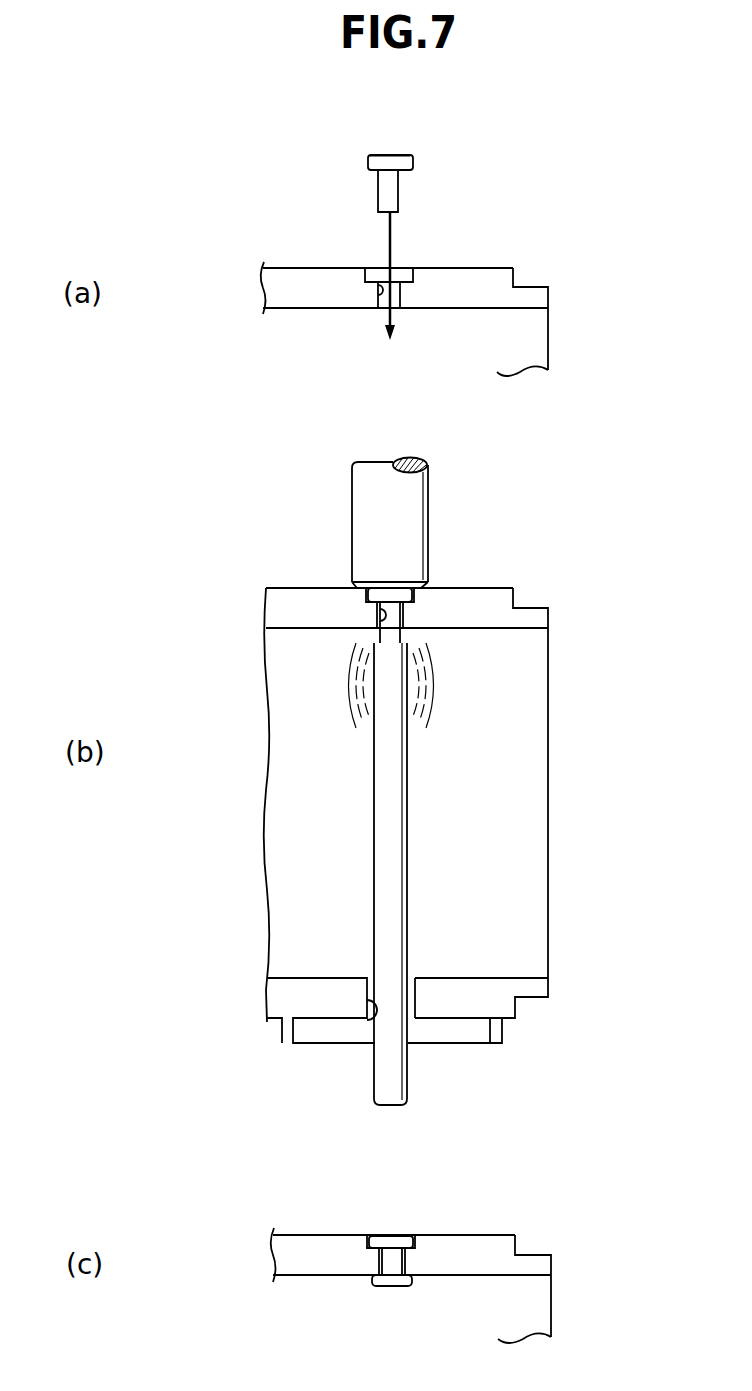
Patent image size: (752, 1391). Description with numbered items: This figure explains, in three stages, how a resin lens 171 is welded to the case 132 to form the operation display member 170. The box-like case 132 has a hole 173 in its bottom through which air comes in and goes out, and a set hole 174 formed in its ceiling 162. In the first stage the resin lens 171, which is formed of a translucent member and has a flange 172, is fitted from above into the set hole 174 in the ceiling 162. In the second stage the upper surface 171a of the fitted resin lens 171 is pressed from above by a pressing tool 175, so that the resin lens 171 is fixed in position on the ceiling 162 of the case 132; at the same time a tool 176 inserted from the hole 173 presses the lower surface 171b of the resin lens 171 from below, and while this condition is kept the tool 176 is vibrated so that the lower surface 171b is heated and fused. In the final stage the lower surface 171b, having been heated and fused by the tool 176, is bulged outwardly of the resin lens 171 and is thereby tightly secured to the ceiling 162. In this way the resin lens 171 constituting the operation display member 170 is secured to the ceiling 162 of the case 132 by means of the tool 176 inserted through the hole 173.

The case 132 is at (532, 277).
The ceiling 162 is at (490, 282).
The operation display member 170 is at (394, 1230).
The resin lens 171 is at (498, 690).
The upper surface 171a is at (386, 154).
The lower surface 171b is at (397, 215).
The flange 172 is at (368, 162).
The hole 173 is at (376, 1019).
The set hole 174 is at (378, 305).
The pressing tool 175 is at (362, 498).
The tool 176 is at (397, 1080).